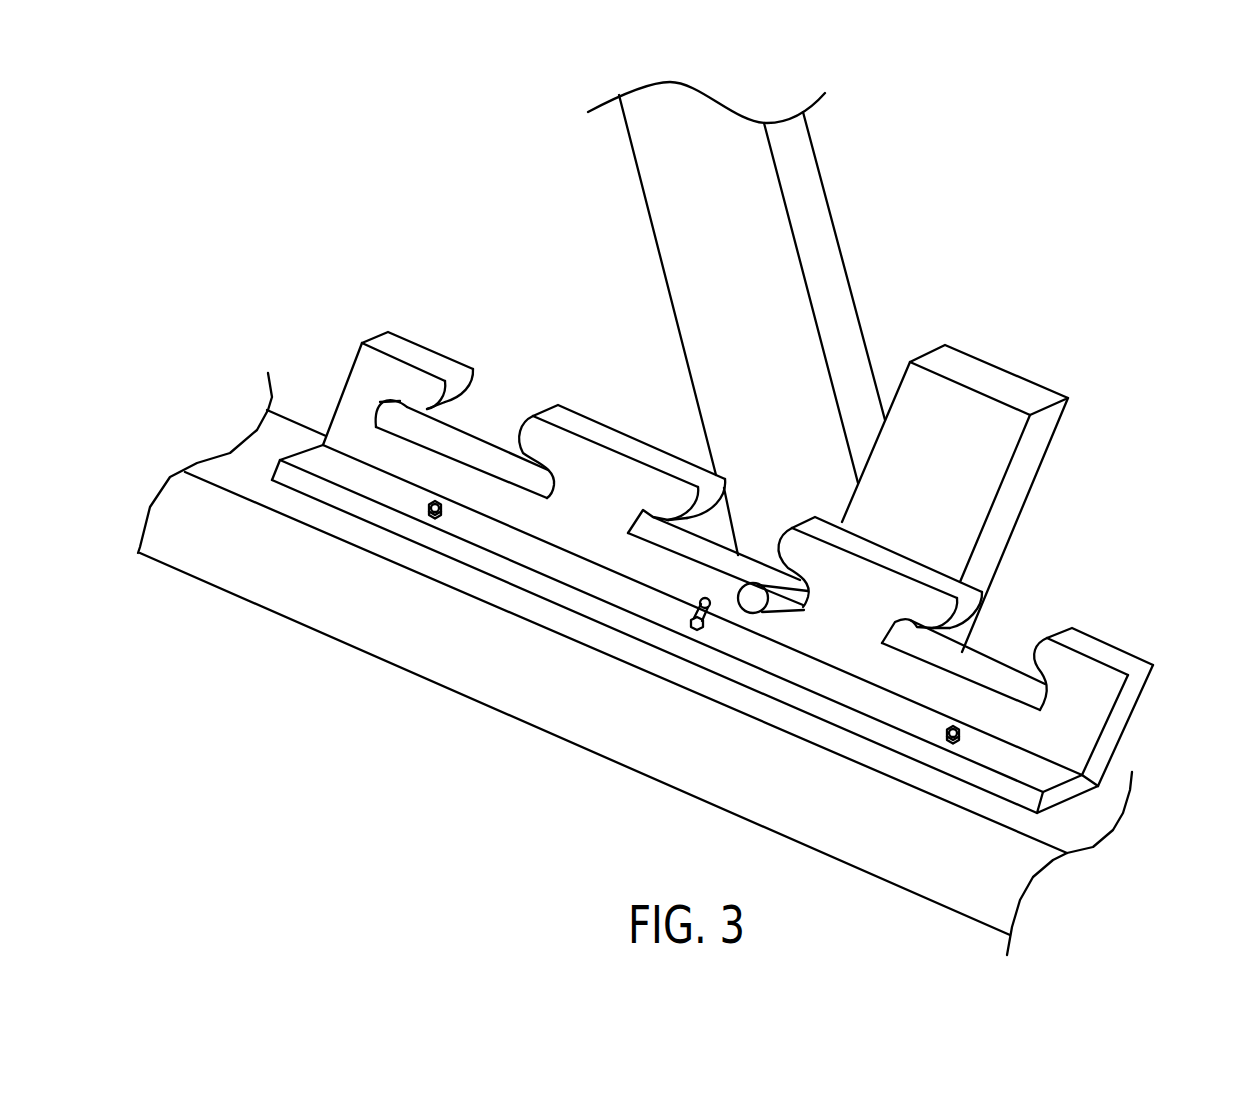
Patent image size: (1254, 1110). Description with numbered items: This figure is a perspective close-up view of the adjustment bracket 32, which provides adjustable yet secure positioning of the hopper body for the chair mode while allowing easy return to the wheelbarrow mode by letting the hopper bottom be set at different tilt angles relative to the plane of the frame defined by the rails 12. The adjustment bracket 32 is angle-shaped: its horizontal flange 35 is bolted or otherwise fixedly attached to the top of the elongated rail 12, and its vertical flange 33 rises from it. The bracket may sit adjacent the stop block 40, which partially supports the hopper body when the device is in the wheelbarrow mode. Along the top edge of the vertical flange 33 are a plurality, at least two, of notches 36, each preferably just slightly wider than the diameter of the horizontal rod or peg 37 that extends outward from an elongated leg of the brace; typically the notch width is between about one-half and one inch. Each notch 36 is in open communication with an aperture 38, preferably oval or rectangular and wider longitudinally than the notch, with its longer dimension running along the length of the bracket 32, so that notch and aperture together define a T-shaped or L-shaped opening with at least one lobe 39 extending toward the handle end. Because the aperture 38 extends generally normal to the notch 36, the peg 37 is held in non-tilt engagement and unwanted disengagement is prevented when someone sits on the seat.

The rail 12 is at (282, 438).
The adjustment bracket 32 is at (746, 572).
The vertical flange 33 is at (1100, 690).
The horizontal flange 35 is at (1040, 775).
The notch 36 is at (495, 422).
The horizontal rod or peg 37 is at (773, 582).
The aperture 38 is at (425, 417).
The lobe 39 is at (940, 635).
The stop block 40 is at (975, 462).